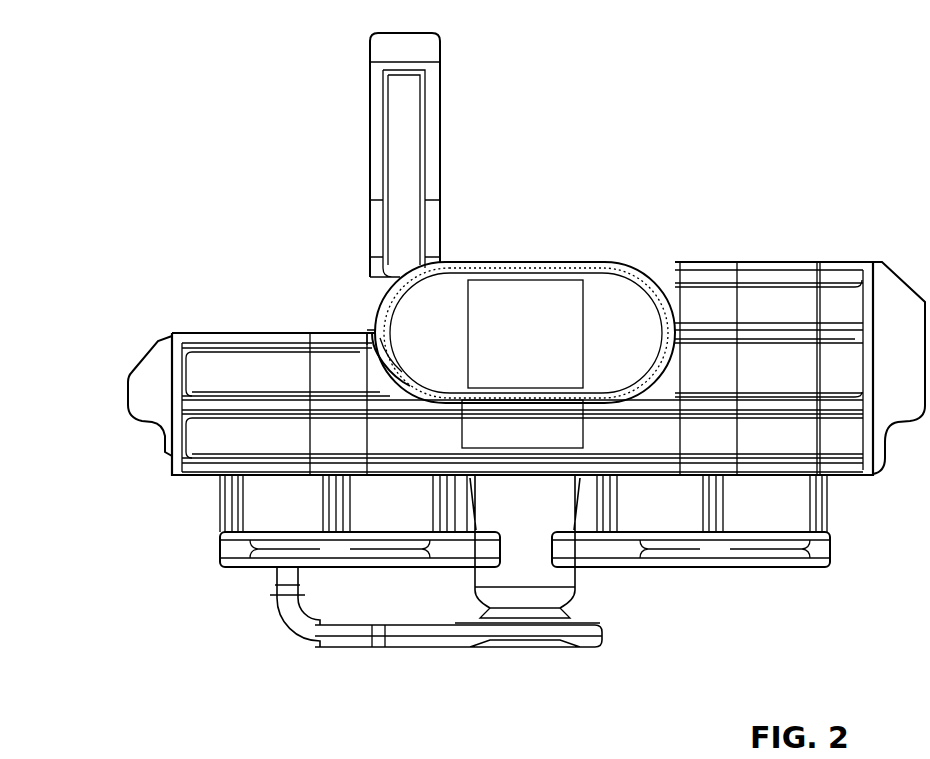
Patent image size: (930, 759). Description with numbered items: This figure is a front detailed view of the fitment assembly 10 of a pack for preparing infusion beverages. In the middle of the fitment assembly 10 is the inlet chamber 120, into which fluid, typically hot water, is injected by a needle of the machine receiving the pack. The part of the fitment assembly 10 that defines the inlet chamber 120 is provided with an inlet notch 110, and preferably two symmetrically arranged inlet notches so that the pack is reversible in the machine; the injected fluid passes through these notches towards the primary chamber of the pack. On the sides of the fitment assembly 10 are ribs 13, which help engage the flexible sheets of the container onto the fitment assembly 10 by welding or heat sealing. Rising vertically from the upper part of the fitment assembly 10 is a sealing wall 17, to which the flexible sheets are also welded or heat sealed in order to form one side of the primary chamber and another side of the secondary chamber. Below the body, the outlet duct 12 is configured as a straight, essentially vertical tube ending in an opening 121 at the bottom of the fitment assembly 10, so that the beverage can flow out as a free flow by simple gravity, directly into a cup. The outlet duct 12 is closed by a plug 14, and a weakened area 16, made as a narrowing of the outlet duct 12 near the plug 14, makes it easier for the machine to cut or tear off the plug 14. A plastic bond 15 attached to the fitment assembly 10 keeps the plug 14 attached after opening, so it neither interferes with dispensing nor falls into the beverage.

The fitment assembly 10 is at (472, 369).
The inlet notch 110 is at (372, 338).
The outlet duct 12 is at (507, 298).
The inlet chamber 120 is at (606, 310).
The opening 121 is at (492, 614).
The ribs 13 is at (805, 400).
The plug 14 is at (576, 648).
The plastic bond 15 is at (280, 630).
The weakened area 16 is at (560, 612).
The sealing wall 17 is at (440, 128).